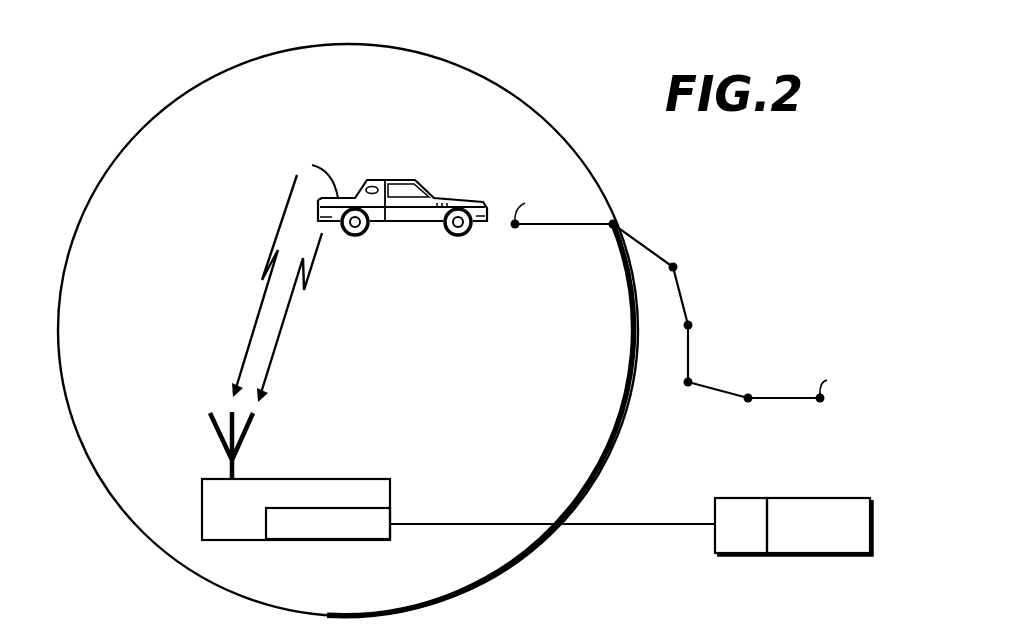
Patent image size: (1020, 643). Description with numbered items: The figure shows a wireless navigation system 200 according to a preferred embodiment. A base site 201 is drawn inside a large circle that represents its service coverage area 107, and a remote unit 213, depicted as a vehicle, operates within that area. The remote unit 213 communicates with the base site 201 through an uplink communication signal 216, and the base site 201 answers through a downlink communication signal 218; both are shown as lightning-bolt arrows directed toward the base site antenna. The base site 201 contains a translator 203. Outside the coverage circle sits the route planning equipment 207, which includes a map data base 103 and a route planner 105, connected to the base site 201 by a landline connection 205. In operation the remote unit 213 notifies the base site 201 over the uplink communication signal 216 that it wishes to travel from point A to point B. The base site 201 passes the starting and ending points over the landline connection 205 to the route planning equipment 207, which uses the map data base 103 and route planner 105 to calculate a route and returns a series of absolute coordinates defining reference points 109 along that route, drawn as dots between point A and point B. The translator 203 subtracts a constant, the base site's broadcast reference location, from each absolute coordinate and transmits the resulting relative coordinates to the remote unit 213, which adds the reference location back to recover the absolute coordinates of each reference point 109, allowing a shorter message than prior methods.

The service coverage area 107 is at (278, 53).
The remote unit 213 is at (398, 178).
The uplink communication signal 216 is at (257, 323).
The downlink communication signal 218 is at (280, 333).
The base site 201 is at (296, 479).
The translator 203 is at (343, 540).
The landline connection 205 is at (630, 526).
The reference points 109 is at (615, 222).
The navigation system 200 is at (750, 177).
The route planning equipment 207 is at (765, 555).
The map data base 103 is at (757, 497).
The route planner 105 is at (855, 498).